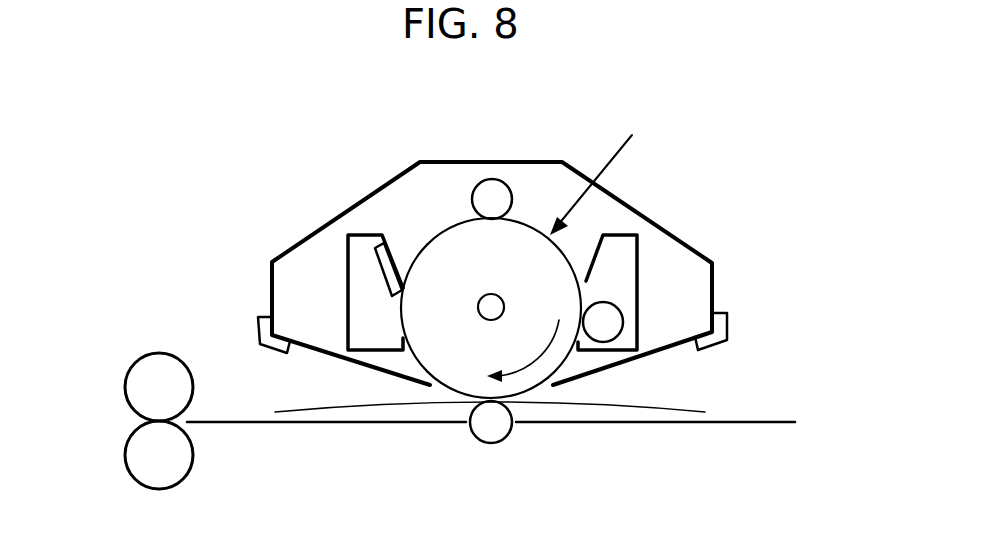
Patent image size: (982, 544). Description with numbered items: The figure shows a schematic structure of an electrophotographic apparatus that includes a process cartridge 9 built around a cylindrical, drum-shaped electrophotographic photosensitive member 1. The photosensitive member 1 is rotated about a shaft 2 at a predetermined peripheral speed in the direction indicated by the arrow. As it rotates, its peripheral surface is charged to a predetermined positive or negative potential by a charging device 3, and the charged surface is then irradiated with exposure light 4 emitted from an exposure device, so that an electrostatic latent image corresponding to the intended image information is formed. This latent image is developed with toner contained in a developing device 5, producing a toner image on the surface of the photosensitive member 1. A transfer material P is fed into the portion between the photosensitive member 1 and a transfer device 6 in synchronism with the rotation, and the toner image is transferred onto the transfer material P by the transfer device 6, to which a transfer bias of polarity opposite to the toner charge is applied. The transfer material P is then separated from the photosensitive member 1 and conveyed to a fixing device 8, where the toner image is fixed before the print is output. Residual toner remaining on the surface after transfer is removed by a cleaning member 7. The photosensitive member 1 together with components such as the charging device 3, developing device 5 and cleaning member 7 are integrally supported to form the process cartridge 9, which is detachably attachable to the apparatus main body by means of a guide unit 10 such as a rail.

The electrophotographic photosensitive member 1 is at (425, 247).
The shaft 2 is at (491, 294).
The charging device 3 is at (471, 200).
The exposure light 4 is at (613, 158).
The developing device 5 is at (639, 283).
The transfer device 6 is at (491, 443).
The cleaning member 7 is at (347, 287).
The fixing device 8 is at (159, 352).
The process cartridge 9 is at (657, 226).
The guide unit 10 is at (257, 333).
The transfer material P is at (686, 409).